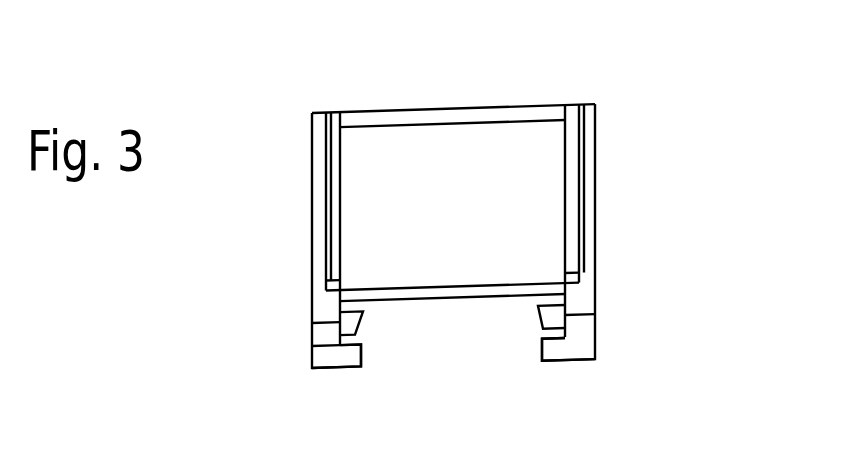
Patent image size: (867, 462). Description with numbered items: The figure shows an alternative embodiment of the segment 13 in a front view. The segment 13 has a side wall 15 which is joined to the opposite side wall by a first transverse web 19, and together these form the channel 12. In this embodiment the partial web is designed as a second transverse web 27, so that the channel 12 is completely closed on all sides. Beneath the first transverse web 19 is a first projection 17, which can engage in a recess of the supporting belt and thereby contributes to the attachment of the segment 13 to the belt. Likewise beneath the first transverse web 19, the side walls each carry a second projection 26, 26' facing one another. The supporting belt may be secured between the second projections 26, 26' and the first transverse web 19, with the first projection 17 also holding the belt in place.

The channel 12 is at (465, 217).
The segment 13 is at (628, 192).
The side wall 15 is at (317, 225).
The first projection 17 is at (547, 317).
The first transverse web 19 is at (443, 293).
The second projection 26 is at (343, 389).
The second projection 26' is at (596, 389).
The second transverse web 27 is at (538, 110).